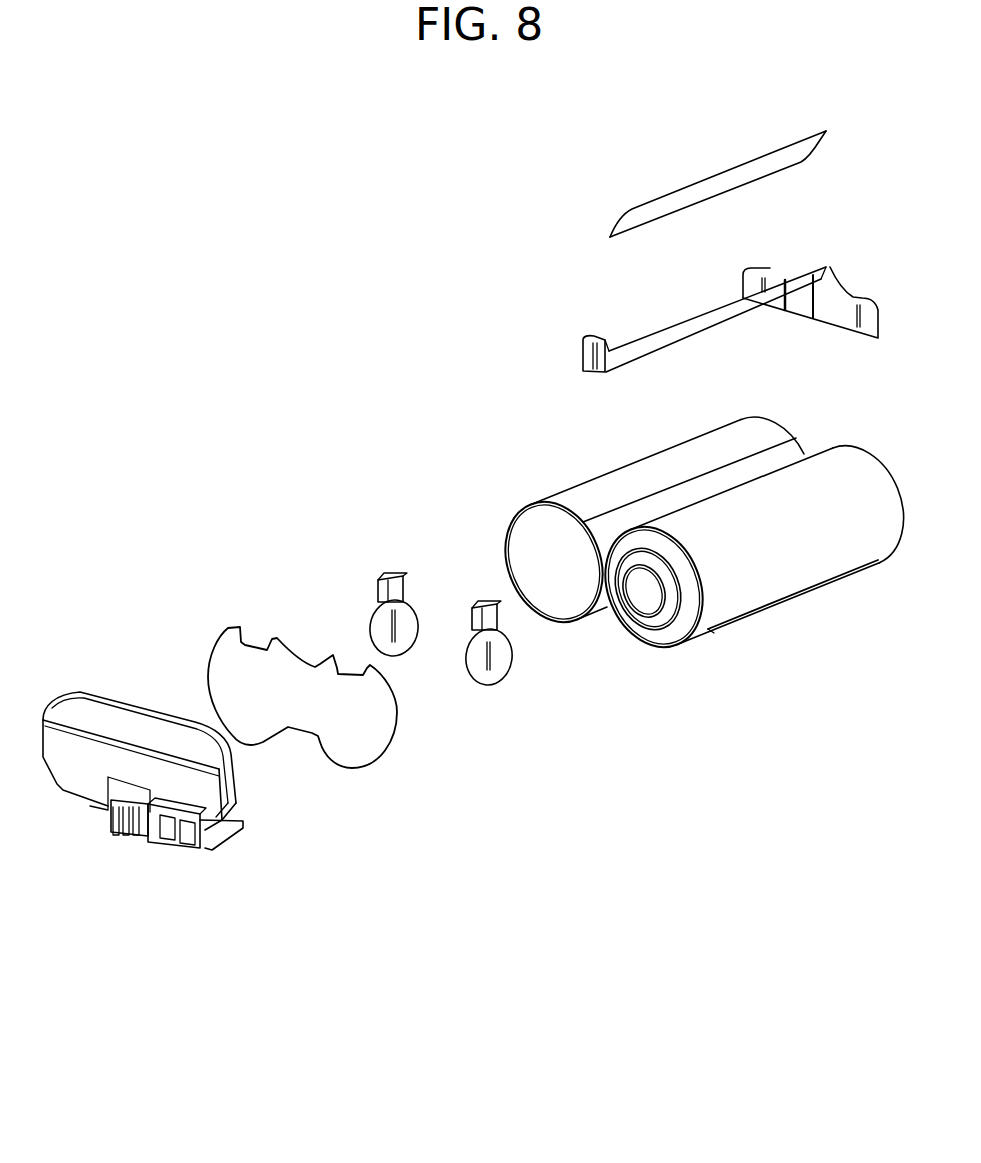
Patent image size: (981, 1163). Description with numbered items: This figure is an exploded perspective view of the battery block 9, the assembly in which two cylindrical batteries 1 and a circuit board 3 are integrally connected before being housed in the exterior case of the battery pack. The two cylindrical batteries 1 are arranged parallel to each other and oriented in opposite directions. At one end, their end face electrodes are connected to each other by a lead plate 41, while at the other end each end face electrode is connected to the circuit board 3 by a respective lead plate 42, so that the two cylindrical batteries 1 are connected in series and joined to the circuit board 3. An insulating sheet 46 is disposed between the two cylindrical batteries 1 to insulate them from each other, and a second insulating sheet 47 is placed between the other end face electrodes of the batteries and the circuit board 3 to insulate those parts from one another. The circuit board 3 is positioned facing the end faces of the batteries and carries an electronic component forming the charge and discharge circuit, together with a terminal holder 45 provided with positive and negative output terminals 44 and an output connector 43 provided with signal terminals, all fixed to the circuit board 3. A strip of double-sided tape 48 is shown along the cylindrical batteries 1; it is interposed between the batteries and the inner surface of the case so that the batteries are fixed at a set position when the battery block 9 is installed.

The battery block 9 is at (303, 332).
The cylindrical battery 1 is at (597, 495).
The circuit board 3 is at (125, 717).
The lead plate 41 is at (837, 308).
The lead plate 42 is at (375, 616).
The output connector 43 is at (104, 839).
The output terminal 44 is at (158, 830).
The terminal holder 45 is at (237, 833).
The insulating sheet 46 is at (660, 504).
The insulating sheet 47 is at (360, 738).
The double-sided tape 48 is at (745, 612).